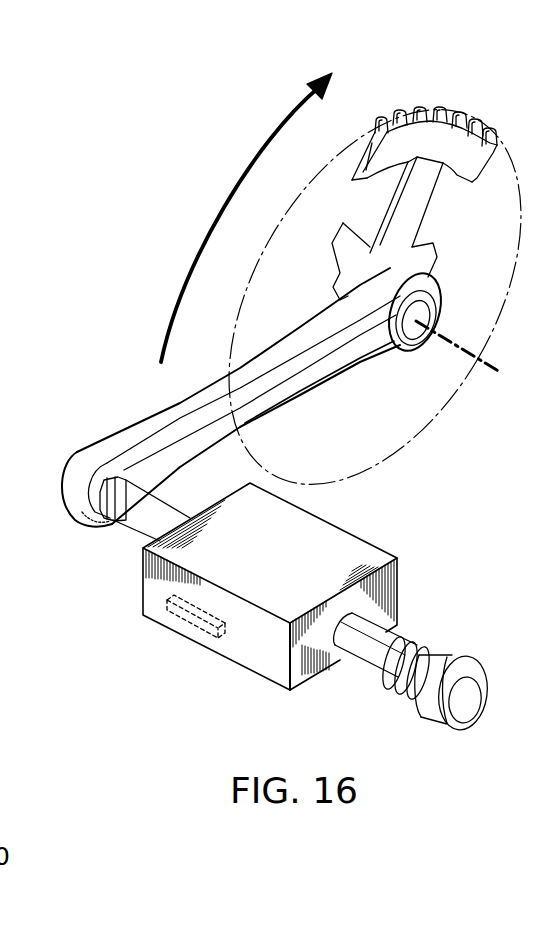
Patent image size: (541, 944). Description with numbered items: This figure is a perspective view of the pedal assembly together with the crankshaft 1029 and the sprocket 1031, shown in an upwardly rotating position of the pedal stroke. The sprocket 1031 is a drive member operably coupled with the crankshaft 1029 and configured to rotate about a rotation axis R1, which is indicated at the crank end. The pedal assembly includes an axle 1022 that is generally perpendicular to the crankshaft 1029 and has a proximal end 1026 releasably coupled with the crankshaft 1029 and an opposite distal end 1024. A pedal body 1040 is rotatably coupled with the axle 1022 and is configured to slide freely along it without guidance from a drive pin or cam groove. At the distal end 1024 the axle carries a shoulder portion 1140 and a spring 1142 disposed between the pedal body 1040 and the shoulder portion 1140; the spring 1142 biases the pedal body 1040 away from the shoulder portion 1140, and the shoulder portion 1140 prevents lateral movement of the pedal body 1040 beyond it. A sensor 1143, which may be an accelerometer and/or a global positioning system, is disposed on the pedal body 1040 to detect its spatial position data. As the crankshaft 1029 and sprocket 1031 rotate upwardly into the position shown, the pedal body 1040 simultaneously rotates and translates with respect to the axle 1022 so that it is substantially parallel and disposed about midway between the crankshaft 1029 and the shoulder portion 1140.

The sprocket 1031 is at (423, 108).
The crankshaft 1029 is at (127, 437).
The rotation axis R1 is at (472, 356).
The proximal end 1026 is at (118, 532).
The pedal body 1040 is at (238, 650).
The sensor 1143 is at (187, 633).
The axle 1022 is at (345, 622).
The spring 1142 is at (390, 683).
The shoulder portion 1140 is at (492, 640).
The distal end 1024 is at (432, 640).